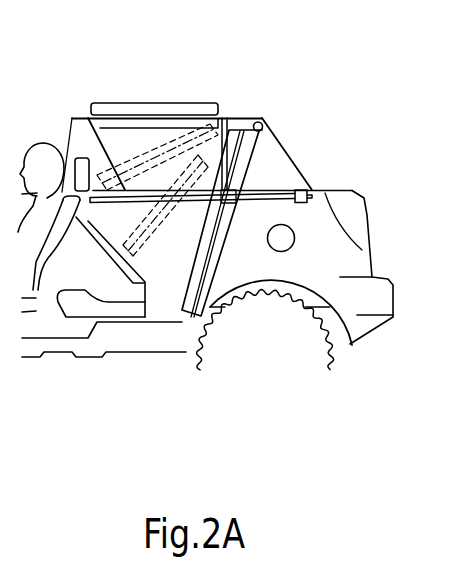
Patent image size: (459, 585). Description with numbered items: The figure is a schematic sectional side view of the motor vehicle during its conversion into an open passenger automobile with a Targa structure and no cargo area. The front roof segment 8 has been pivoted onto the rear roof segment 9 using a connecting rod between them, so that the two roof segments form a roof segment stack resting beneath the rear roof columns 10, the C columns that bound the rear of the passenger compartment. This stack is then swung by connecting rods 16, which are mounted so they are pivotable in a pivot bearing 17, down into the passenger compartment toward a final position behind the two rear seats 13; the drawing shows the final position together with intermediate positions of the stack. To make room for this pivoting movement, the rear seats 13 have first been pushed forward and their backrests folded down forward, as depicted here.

The front roof segment 8 is at (152, 106).
The rear roof segment 9 is at (185, 120).
The rear roof columns 10 is at (277, 155).
The rear seats 13 is at (120, 308).
The connecting rods 16 is at (257, 173).
The pivot bearing 17 is at (265, 118).